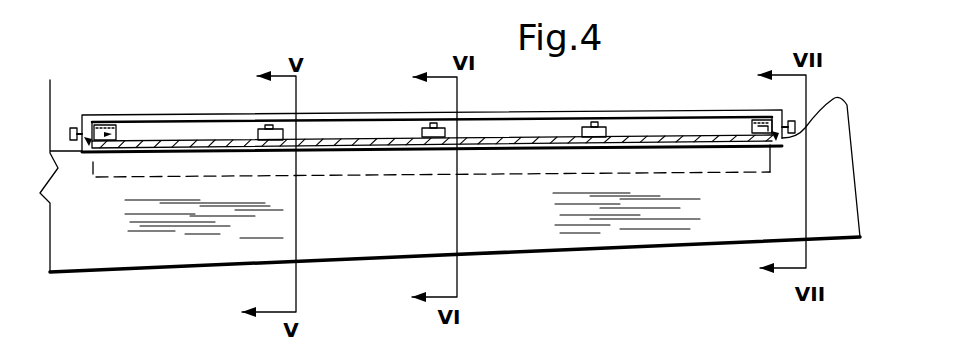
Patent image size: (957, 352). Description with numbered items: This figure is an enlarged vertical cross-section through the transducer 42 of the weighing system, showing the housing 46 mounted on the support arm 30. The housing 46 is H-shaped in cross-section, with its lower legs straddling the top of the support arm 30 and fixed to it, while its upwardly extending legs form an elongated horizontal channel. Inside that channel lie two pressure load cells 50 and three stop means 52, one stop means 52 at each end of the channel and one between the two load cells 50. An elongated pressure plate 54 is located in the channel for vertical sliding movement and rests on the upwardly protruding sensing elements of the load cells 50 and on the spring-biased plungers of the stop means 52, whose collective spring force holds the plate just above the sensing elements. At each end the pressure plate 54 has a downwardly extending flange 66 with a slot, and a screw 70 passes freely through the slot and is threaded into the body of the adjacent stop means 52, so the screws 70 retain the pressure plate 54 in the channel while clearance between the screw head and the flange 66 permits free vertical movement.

The support arm 30 is at (121, 250).
The transducer 42 is at (99, 70).
The housing 46 is at (147, 143).
The pressure load cell 50 is at (258, 133).
The stop means 52 is at (124, 114).
The pressure plate 54 is at (692, 110).
The flange 66 is at (89, 145).
The screw 70 is at (74, 128).